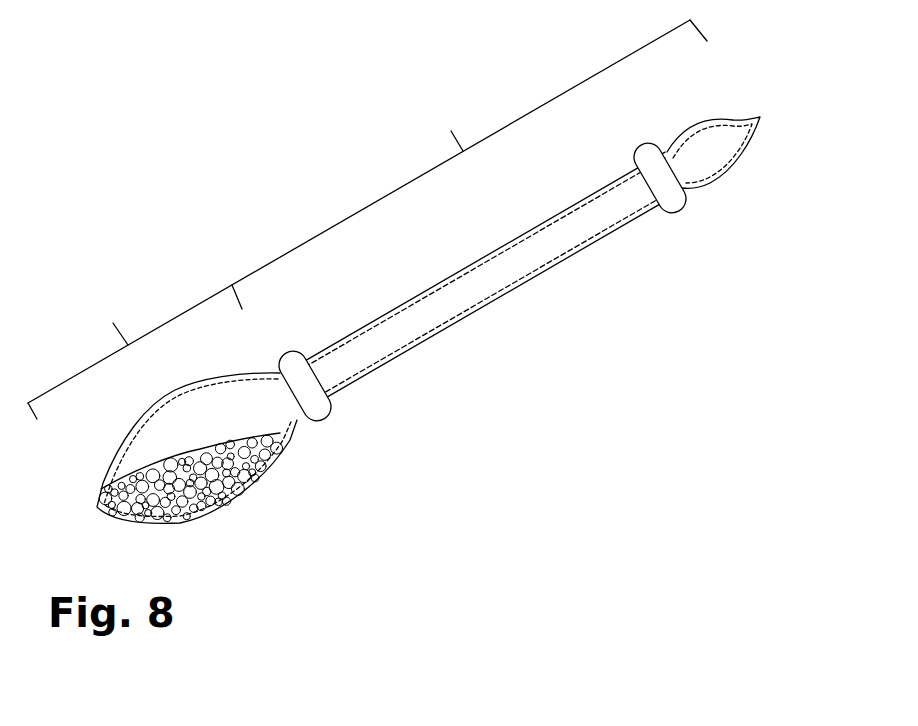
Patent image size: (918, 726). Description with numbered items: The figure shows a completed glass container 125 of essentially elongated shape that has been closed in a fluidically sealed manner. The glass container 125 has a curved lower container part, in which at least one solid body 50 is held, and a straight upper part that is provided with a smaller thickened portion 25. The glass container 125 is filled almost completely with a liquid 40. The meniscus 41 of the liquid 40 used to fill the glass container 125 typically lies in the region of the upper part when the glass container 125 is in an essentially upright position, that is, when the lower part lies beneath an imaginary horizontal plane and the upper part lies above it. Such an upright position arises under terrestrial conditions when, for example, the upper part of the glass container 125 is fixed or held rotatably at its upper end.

The glass container 125 is at (340, 43).
The liquid 40 is at (365, 352).
The meniscus 41 is at (662, 208).
The thickened portion 25 is at (750, 173).
The solid body 50 is at (237, 493).